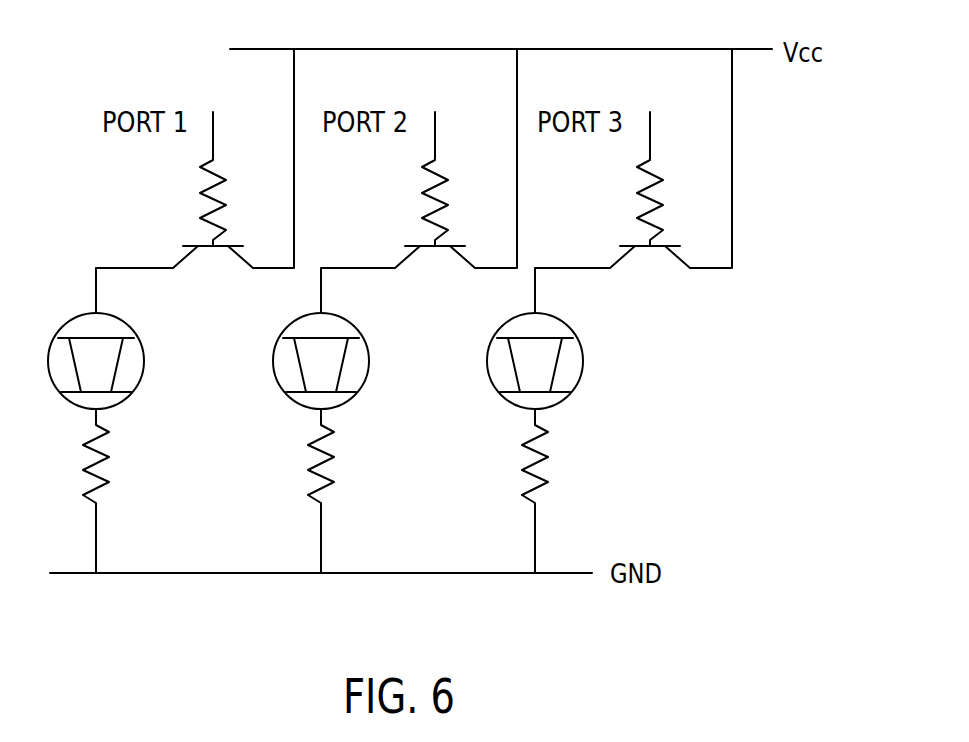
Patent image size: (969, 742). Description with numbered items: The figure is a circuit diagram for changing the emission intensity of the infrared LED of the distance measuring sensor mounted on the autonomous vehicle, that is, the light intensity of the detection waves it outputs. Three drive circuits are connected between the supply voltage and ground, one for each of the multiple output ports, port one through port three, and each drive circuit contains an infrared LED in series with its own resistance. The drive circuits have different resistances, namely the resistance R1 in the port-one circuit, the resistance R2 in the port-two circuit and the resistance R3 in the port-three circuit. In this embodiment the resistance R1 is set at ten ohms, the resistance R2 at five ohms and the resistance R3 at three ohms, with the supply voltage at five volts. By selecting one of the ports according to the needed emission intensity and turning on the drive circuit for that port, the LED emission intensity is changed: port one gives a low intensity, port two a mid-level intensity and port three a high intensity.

The resistance R1 is at (78, 491).
The resistance R2 is at (299, 491).
The resistance R3 is at (512, 491).